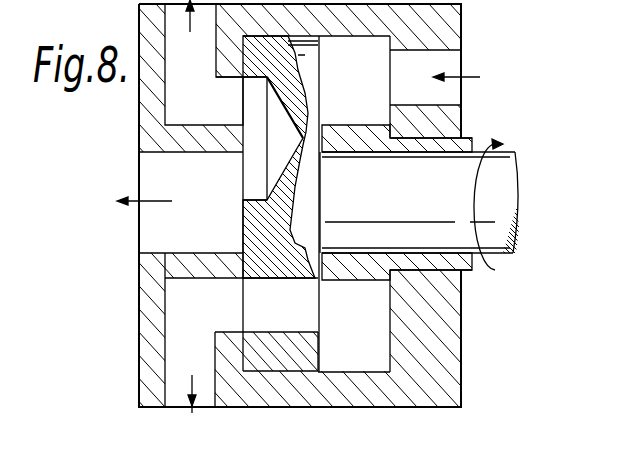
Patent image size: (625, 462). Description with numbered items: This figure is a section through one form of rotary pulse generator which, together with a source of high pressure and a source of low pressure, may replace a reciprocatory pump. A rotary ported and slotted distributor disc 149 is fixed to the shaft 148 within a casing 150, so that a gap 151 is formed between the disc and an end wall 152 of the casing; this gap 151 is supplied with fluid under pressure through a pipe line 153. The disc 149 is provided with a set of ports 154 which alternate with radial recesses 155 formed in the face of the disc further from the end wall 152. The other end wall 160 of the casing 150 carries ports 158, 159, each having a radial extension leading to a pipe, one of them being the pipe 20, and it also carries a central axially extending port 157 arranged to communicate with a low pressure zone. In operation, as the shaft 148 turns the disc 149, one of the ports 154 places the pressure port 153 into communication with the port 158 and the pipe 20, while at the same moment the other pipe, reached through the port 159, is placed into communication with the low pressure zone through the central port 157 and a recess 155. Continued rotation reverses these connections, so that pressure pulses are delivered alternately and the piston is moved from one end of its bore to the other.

The pipe 20 is at (172, 387).
The shaft 148 is at (490, 233).
The rotary ported and slotted distributor disc 149 is at (304, 192).
The casing 150 is at (458, 362).
The gap 151 is at (360, 362).
The end wall 152 is at (432, 307).
The pipe line 153 is at (448, 63).
The ports 154 is at (287, 327).
The radial recesses 155 is at (273, 125).
The central axially extending port 157 is at (168, 225).
The port 158 is at (242, 311).
The port 159 is at (202, 80).
The other end wall 160 is at (223, 368).